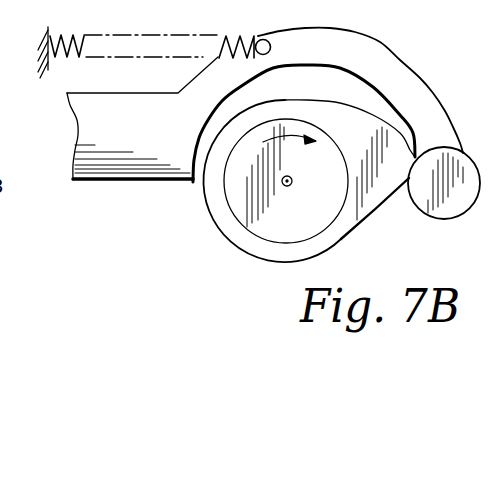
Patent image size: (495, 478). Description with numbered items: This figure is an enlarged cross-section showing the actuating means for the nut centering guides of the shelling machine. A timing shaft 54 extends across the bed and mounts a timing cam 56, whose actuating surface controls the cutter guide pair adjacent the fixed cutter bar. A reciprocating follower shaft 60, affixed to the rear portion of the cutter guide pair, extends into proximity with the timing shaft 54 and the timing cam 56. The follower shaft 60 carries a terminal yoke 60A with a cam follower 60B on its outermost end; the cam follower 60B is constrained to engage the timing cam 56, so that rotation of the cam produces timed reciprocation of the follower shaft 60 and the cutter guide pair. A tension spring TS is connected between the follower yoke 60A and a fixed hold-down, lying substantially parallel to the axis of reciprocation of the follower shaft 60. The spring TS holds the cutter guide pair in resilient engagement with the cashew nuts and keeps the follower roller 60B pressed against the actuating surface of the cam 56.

The tension spring TS is at (152, 35).
The reciprocating follower shaft 60 is at (132, 128).
The terminal yoke 60A is at (352, 30).
The cam follower 60B is at (452, 207).
The timing cam 56 is at (223, 220).
The timing shaft 54 is at (288, 187).